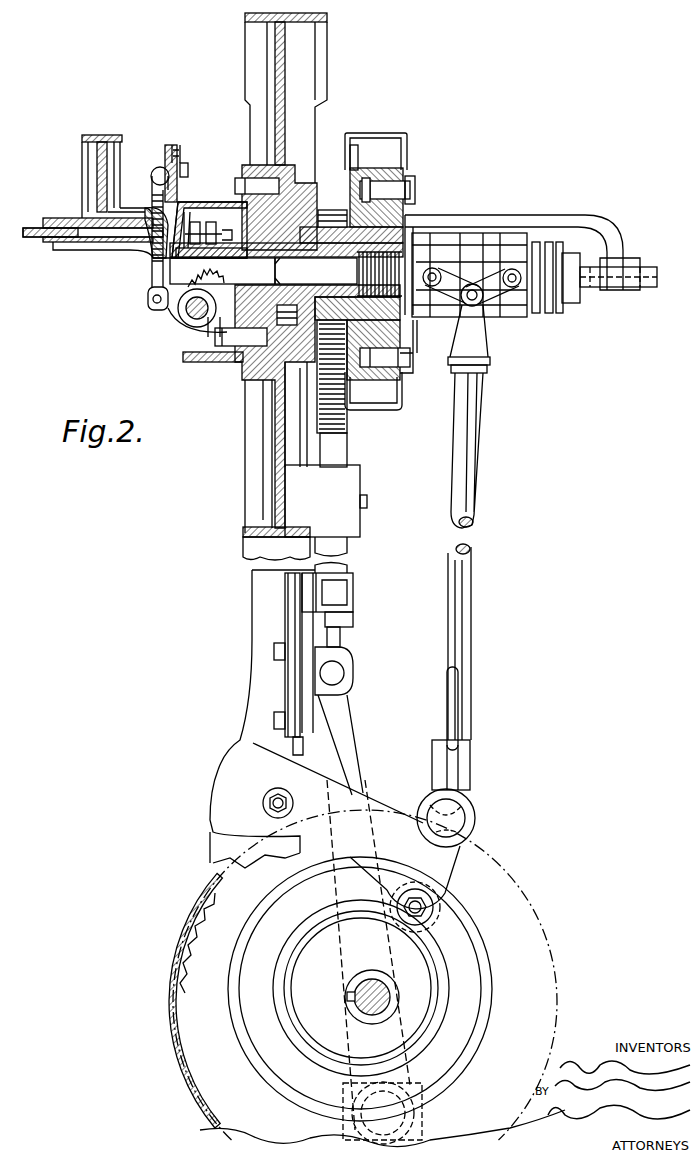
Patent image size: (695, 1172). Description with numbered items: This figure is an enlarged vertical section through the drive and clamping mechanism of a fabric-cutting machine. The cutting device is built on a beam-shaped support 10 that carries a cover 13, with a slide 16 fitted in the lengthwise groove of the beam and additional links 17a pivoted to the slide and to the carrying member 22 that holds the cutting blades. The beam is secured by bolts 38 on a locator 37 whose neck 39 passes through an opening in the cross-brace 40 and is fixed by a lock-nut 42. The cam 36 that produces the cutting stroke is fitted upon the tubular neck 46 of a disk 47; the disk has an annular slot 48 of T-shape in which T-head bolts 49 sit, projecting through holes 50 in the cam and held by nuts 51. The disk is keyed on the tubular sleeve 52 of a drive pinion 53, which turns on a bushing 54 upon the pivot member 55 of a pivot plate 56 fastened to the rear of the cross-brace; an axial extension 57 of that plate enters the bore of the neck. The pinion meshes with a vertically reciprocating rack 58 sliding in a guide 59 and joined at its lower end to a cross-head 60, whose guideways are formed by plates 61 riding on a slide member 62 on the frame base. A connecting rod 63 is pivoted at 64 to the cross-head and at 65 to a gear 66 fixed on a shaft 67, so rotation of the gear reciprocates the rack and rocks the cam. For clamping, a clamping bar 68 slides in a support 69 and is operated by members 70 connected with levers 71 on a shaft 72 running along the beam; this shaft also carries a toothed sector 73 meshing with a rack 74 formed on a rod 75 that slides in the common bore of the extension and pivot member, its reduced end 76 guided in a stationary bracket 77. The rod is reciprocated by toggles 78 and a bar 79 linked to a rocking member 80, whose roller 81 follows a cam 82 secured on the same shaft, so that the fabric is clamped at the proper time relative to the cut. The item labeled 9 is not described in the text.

The bracket 9 is at (407, 138).
The support 10 is at (150, 262).
The cover 13 is at (212, 202).
The slide 16 is at (206, 272).
The additional links 17a is at (208, 226).
The carrying member 22 is at (158, 190).
The cam 36 is at (405, 385).
The locator 37 is at (270, 383).
The bolts 38 is at (225, 362).
The neck 39 is at (305, 364).
The cross-brace 40 is at (280, 185).
The lock-nut 42 is at (300, 185).
The tubular neck 46 is at (403, 212).
The disk 47 is at (354, 145).
The annular slot 48 is at (403, 170).
The T-head bolts 49 is at (410, 191).
The holes 50 is at (410, 186).
The nuts 51 is at (415, 195).
The tubular sleeve 52 is at (430, 222).
The drive pinion 53 is at (336, 200).
The bushing 54 is at (450, 224).
The pivot member 55 is at (417, 325).
The pivot plate 56 is at (307, 380).
The axial extension 57 is at (215, 337).
The rack 58 is at (340, 447).
The guide 59 is at (345, 525).
The cross-head 60 is at (345, 600).
The plates 61 is at (285, 622).
The slide member 62 is at (293, 740).
The connecting rod 63 is at (352, 760).
The pivot 64 is at (344, 672).
The pivot 65 is at (415, 1085).
The gear 66 is at (553, 978).
The shaft 67 is at (358, 1012).
The clamping bar 68 is at (30, 237).
The support 69 is at (85, 243).
The members 70 is at (190, 213).
The levers 71 is at (185, 333).
The shaft 72 is at (178, 310).
The toothed sector 73 is at (148, 294).
The rack 74 is at (222, 271).
The rod 75 is at (338, 274).
The reduced end 76 is at (648, 290).
The stationary bracket 77 is at (612, 216).
The toggles 78 is at (472, 320).
The bar 79 is at (470, 458).
The rocking member 80 is at (425, 808).
The roller 81 is at (440, 912).
The cam 82 is at (470, 1010).